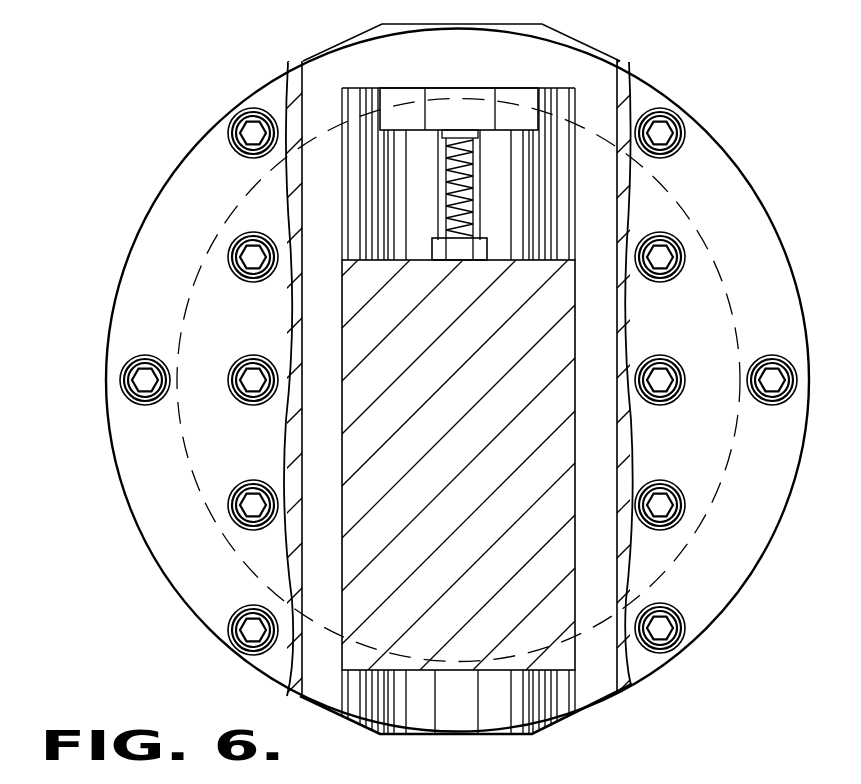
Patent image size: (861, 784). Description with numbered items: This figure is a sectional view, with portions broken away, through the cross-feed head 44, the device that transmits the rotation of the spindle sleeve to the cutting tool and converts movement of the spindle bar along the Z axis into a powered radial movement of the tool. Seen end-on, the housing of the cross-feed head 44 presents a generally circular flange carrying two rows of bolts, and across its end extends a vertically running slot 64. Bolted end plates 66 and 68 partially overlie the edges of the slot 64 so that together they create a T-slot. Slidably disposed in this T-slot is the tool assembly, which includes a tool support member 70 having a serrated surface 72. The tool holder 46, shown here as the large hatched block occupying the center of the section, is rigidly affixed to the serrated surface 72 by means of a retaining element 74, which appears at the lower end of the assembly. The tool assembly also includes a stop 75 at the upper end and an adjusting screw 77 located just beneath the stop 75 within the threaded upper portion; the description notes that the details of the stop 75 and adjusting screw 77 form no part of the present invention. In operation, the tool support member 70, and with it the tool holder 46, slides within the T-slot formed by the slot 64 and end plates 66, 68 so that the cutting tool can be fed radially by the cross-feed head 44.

The cross-feed head 44 is at (762, 594).
The tool holder 46 is at (496, 456).
The slot 64 is at (580, 68).
The end plate 66 is at (138, 263).
The end plate 68 is at (774, 241).
The tool support member 70 is at (606, 692).
The serrated surface 72 is at (543, 729).
The retaining element 74 is at (458, 723).
The stop 75 is at (466, 105).
The adjusting screw 77 is at (448, 182).